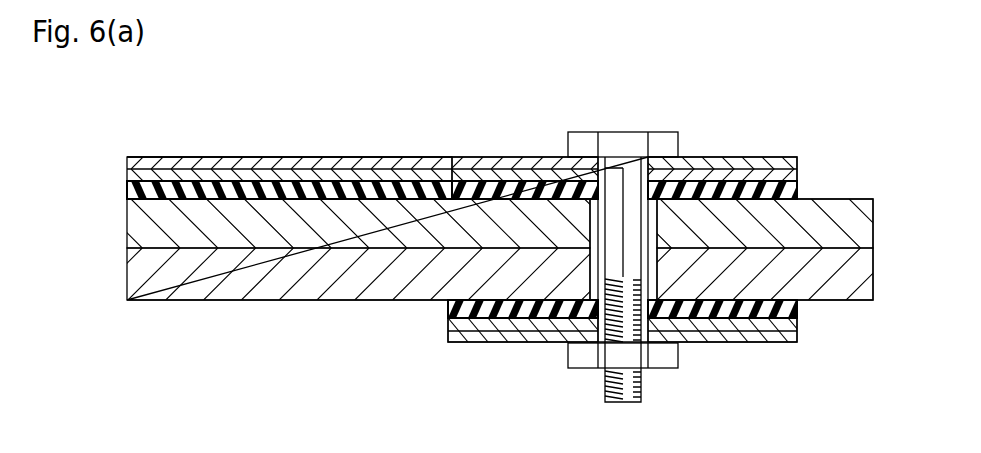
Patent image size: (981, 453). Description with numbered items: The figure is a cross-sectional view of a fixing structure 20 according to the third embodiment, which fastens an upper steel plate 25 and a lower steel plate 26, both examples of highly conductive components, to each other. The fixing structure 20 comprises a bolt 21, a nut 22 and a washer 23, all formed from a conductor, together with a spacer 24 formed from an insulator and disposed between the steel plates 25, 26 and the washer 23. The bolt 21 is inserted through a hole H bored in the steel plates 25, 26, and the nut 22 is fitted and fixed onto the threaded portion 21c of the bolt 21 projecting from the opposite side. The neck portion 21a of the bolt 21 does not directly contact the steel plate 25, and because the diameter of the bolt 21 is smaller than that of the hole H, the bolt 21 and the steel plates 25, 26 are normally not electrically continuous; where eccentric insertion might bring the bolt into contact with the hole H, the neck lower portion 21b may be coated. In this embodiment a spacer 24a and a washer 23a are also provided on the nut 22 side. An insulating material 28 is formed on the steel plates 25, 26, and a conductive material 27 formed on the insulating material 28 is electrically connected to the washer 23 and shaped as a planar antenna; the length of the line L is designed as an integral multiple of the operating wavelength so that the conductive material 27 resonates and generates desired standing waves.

The fixing structure 20 is at (821, 96).
The bolt 21 is at (630, 132).
The neck portion 21a is at (568, 135).
The neck lower portion 21b is at (598, 258).
The threaded portion 21c is at (604, 387).
The nut 22 is at (662, 369).
The washer 23 is at (797, 166).
The spacer 24 is at (797, 190).
The washer 23a is at (797, 340).
The spacer 24a is at (797, 318).
The steel plate 25 is at (873, 232).
The steel plate 26 is at (873, 278).
The conductive material 27 is at (125, 159).
The insulating material 28 is at (125, 188).
The line L is at (302, 162).
The hole H is at (657, 255).